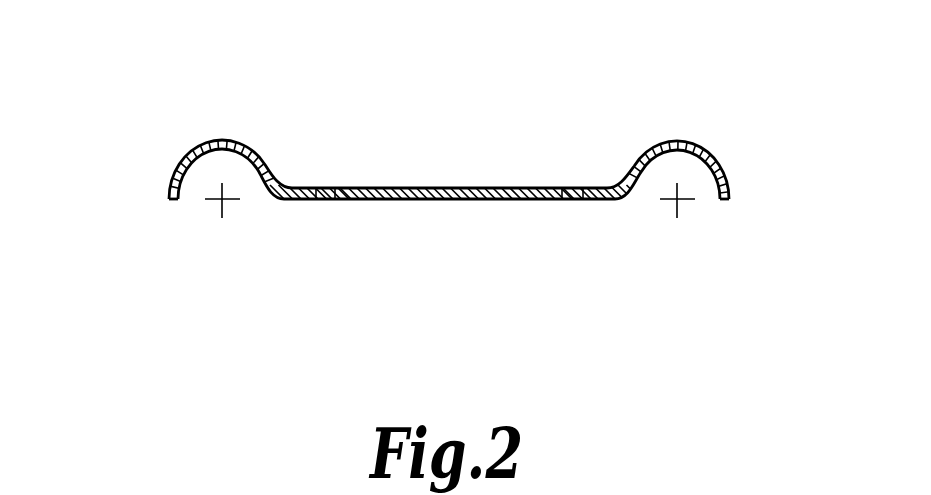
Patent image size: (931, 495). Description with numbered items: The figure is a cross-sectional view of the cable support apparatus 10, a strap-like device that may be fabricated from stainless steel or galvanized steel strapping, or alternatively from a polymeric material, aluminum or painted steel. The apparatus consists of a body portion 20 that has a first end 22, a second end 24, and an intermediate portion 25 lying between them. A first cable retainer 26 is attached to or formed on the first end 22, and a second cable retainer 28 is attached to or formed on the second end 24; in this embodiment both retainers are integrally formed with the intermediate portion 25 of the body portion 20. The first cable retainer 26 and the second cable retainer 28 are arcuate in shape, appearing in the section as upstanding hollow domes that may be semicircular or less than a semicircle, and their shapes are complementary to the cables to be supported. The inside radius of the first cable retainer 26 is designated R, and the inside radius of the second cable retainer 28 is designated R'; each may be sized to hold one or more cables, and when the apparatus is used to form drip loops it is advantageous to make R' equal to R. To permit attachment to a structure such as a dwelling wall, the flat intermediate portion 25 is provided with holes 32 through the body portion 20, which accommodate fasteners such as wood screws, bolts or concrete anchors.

The cable support apparatus 10 is at (777, 205).
The body portion 20 is at (447, 206).
The first end 22 is at (158, 197).
The second end 24 is at (735, 207).
The intermediate portion 25 is at (377, 199).
The first cable retainer 26 is at (258, 147).
The second cable retainer 28 is at (710, 147).
The holes 32 is at (325, 199).
The inside radius of the first cable retainer R is at (181, 170).
The inside radius of the second cable retainer R' is at (632, 171).